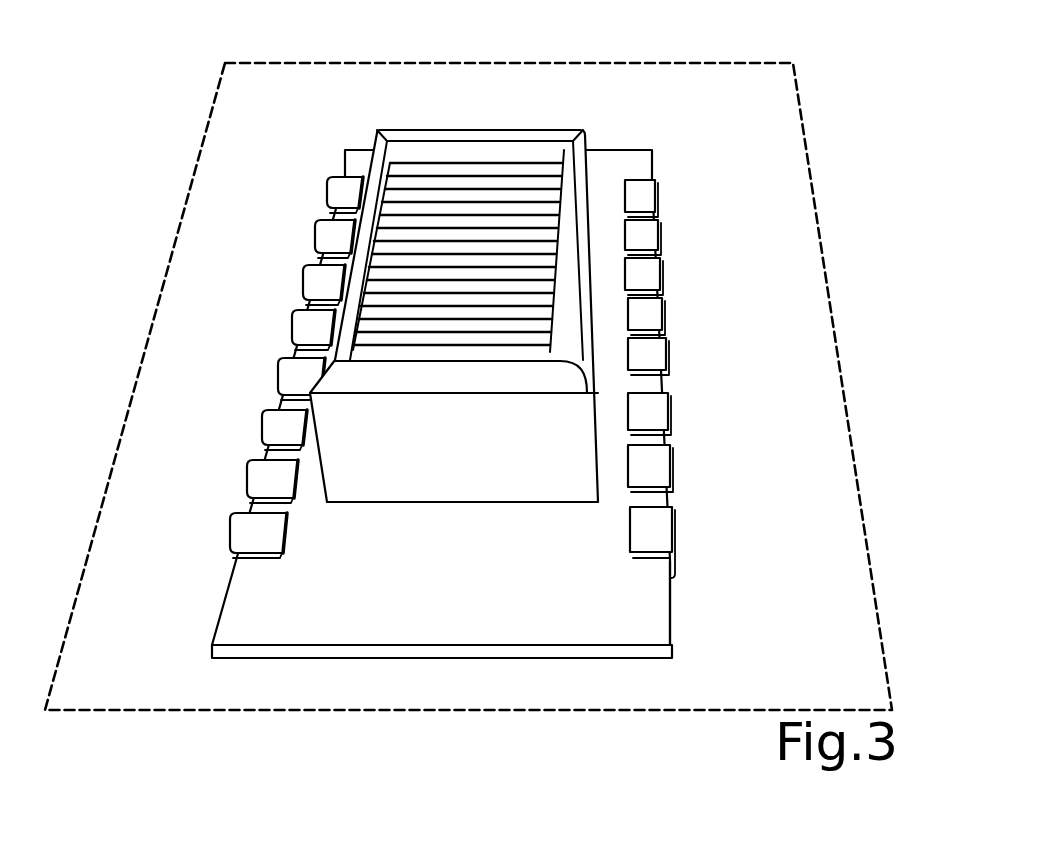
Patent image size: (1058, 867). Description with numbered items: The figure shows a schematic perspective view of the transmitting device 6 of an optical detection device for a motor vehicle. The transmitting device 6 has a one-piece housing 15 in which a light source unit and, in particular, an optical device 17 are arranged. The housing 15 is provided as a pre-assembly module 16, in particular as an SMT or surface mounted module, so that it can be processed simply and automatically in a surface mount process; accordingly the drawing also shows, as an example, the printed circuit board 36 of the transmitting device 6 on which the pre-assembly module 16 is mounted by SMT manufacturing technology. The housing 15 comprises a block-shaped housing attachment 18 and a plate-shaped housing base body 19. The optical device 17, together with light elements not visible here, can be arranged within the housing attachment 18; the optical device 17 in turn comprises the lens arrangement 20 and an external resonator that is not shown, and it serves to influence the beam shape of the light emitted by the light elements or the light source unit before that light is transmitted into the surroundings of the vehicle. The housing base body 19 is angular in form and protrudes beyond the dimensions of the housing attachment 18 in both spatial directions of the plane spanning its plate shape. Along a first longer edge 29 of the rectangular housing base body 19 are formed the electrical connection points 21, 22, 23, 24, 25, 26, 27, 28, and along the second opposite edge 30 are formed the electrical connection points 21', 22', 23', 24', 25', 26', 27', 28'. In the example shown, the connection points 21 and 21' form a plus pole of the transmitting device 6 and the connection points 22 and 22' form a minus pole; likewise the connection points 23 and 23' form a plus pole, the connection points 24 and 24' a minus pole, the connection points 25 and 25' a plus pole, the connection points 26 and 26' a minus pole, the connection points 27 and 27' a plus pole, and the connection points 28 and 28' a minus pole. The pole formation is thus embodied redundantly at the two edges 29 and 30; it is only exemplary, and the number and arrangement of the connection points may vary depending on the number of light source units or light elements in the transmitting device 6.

The transmitting device 6 is at (474, 90).
The housing 15 is at (494, 352).
The pre-assembly module 16 is at (463, 426).
The optical device 17 is at (458, 181).
The housing attachment 18 is at (437, 370).
The housing base body 19 is at (552, 540).
The lens arrangement 20 is at (507, 180).
The connection point 21 is at (689, 184).
The connection point 22 is at (692, 222).
The connection point 23 is at (695, 261).
The connection point 24 is at (697, 302).
The connection point 25 is at (699, 344).
The connection point 26 is at (701, 399).
The connection point 27 is at (699, 455).
The connection point 28 is at (703, 532).
The first longer edge 29 is at (668, 597).
The connection point 21' is at (292, 180).
The connection point 22' is at (283, 224).
The connection point 23' is at (272, 269).
The connection point 24' is at (260, 314).
The connection point 25' is at (249, 364).
The connection point 26' is at (234, 415).
The connection point 27' is at (223, 467).
The connection point 28' is at (211, 522).
The second opposite edge 30 is at (215, 620).
The printed circuit board 36 is at (803, 223).